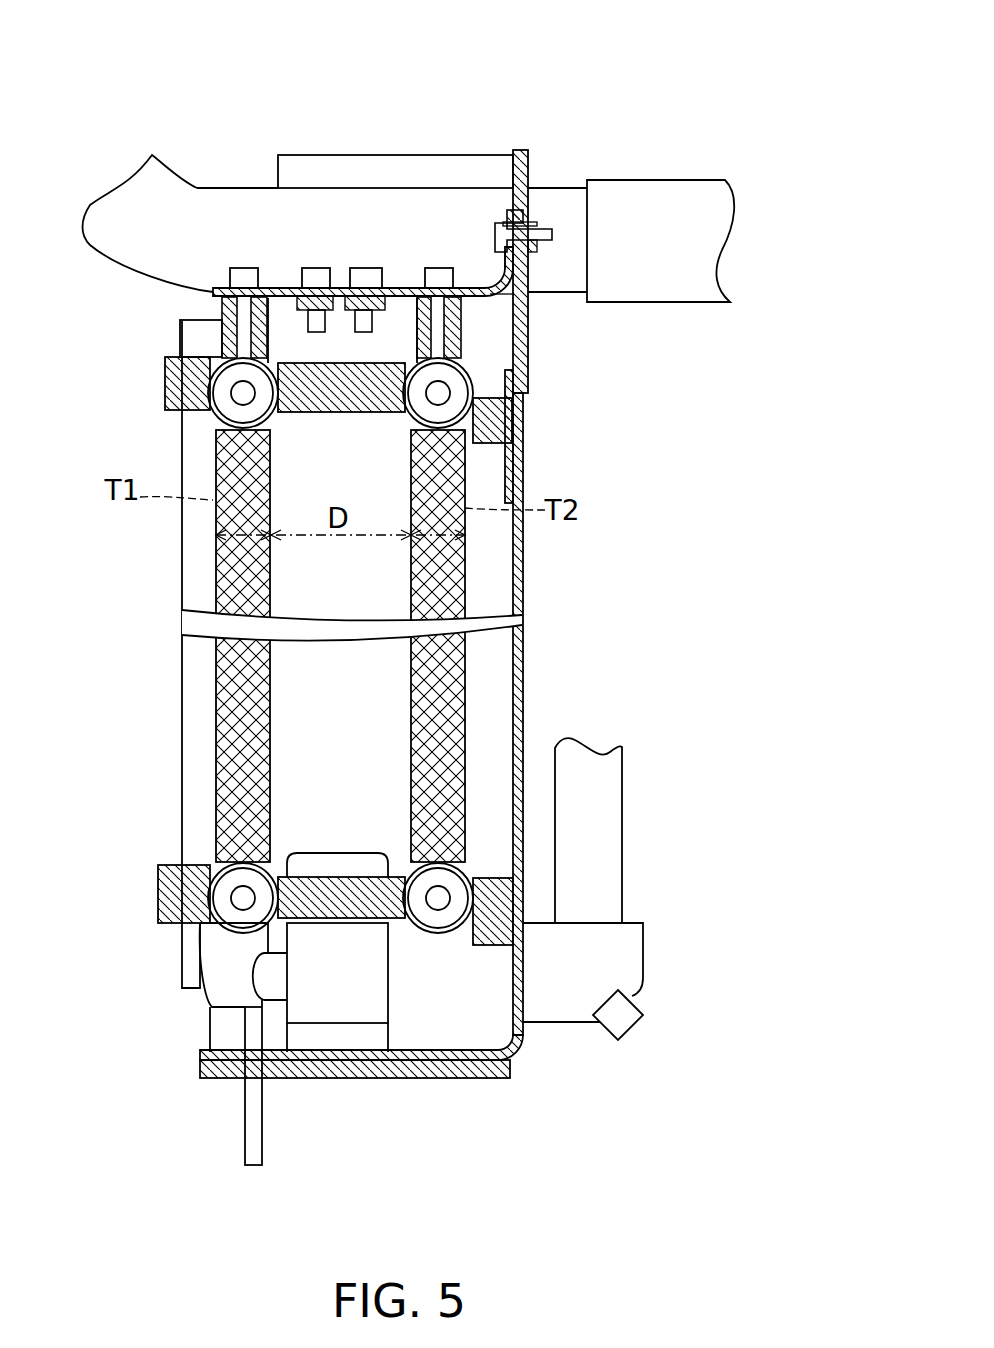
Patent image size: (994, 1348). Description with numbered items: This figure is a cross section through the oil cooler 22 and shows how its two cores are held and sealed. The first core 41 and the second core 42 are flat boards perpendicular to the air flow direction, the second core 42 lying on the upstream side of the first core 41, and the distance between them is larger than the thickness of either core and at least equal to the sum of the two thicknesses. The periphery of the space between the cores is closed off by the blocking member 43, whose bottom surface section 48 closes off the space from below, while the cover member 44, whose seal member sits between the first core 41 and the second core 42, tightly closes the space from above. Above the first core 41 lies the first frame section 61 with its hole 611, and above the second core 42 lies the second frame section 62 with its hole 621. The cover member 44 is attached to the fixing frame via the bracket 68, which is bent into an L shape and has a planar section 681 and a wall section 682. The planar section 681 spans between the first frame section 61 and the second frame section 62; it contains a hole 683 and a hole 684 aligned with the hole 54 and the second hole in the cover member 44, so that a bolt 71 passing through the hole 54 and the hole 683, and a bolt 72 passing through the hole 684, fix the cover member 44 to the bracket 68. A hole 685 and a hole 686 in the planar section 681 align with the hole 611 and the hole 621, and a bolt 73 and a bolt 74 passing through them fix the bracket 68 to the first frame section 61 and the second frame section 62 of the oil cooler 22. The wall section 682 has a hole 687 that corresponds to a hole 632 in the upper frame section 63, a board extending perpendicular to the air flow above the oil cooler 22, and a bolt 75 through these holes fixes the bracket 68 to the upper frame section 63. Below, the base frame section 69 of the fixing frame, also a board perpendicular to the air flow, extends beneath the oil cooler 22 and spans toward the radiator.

The oil cooler 22 is at (190, 553).
The first core 41 is at (214, 683).
The second core 42 is at (466, 683).
The blocking member 43 is at (408, 946).
The cover member 44 is at (212, 340).
The bottom surface section 48 is at (337, 902).
The hole 54 is at (238, 296).
The first frame section 61 is at (216, 328).
The second frame section 62 is at (453, 328).
The upper frame section 63 is at (528, 362).
The bracket 68 is at (434, 277).
The base frame section 69 is at (460, 1068).
The bolt 71 is at (318, 277).
The bolt 72 is at (367, 275).
The bolt 73 is at (274, 294).
The bolt 74 is at (496, 225).
The bolt 75 is at (545, 234).
The hole 611 is at (245, 275).
The hole 621 is at (470, 286).
The hole 632 is at (517, 292).
The planar section 681 is at (340, 296).
The wall section 682 is at (522, 212).
The hole 683 is at (267, 290).
The hole 684 is at (410, 272).
The hole 685 is at (213, 290).
The hole 686 is at (506, 262).
The hole 687 is at (532, 240).